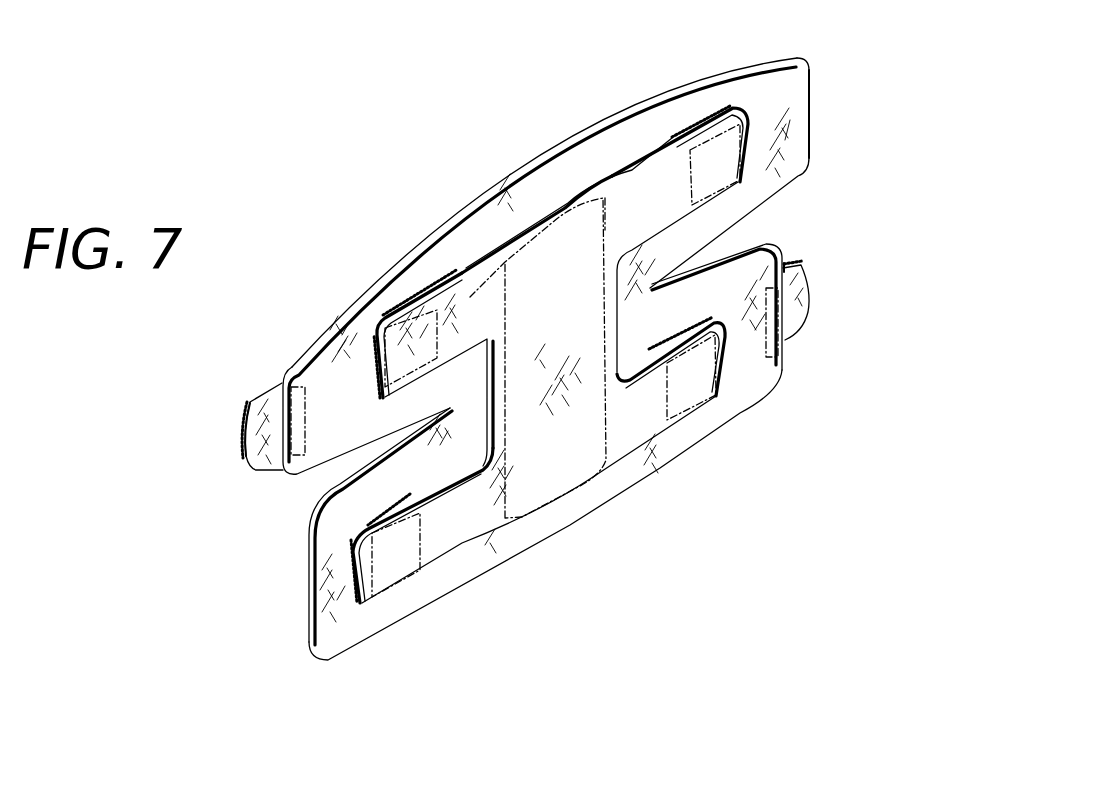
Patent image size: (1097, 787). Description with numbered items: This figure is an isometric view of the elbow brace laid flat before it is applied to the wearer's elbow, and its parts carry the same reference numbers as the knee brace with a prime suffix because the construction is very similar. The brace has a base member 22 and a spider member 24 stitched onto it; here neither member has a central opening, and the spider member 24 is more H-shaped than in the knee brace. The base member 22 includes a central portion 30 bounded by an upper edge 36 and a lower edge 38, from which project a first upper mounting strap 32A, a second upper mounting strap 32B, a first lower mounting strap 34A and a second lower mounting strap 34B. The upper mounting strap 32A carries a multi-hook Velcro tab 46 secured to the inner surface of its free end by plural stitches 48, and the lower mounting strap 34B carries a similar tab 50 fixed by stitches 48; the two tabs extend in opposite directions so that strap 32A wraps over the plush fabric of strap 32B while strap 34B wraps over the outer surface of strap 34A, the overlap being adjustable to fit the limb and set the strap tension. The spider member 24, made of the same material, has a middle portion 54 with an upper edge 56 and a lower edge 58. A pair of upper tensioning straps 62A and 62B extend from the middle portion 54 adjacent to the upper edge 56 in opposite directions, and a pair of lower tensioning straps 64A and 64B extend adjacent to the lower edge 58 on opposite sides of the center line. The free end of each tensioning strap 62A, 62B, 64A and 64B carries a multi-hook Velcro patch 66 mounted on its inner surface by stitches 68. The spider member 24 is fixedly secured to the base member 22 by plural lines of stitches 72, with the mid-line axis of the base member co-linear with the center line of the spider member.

The base member 22 is at (539, 160).
The spider member 24 is at (470, 283).
The central portion 30 is at (525, 208).
The upper edge 36 is at (403, 257).
The first upper mounting strap 32A is at (332, 367).
The second upper mounting strap 32B is at (795, 92).
The first lower mounting strap 34A is at (345, 630).
The second lower mounting strap 34B is at (742, 397).
The lower edge 38 is at (461, 595).
The tab 46 is at (268, 453).
The stitches 48 is at (303, 403).
The tab 50 is at (807, 308).
The middle portion 54 is at (531, 498).
The upper edge 56 is at (568, 190).
The lower edge 58 is at (588, 490).
The upper tensioning strap 62A is at (478, 295).
The upper tensioning strap 62B is at (678, 158).
The lower tensioning strap 64A is at (440, 553).
The lower tensioning strap 64B is at (632, 438).
The multi-hook Velcro patch 66 is at (730, 104).
The stitches 68 is at (745, 158).
The lines of stitches 72 is at (608, 222).